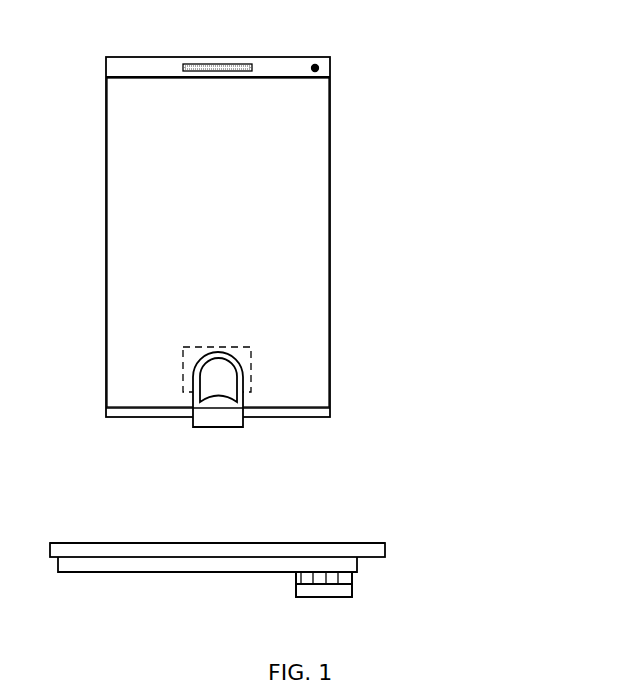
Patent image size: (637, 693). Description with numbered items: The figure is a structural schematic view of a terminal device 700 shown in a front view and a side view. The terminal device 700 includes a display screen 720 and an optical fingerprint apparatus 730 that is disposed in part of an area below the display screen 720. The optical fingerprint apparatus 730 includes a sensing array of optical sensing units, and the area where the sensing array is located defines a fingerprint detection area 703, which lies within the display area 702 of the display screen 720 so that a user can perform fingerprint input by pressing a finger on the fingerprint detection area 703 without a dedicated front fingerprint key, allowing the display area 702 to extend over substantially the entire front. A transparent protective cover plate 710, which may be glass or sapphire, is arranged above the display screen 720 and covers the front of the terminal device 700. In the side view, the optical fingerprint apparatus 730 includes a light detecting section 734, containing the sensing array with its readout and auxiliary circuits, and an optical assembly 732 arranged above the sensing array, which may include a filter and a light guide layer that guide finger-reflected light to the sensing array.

The terminal device 700 is at (225, 27).
The transparent protective cover plate 710 is at (287, 68).
The display area 702 is at (314, 347).
The fingerprint detection area 703 is at (251, 367).
The display screen 720 is at (225, 573).
The optical fingerprint apparatus 730 is at (389, 594).
The optical assembly 732 is at (352, 577).
The light detecting section 734 is at (352, 590).